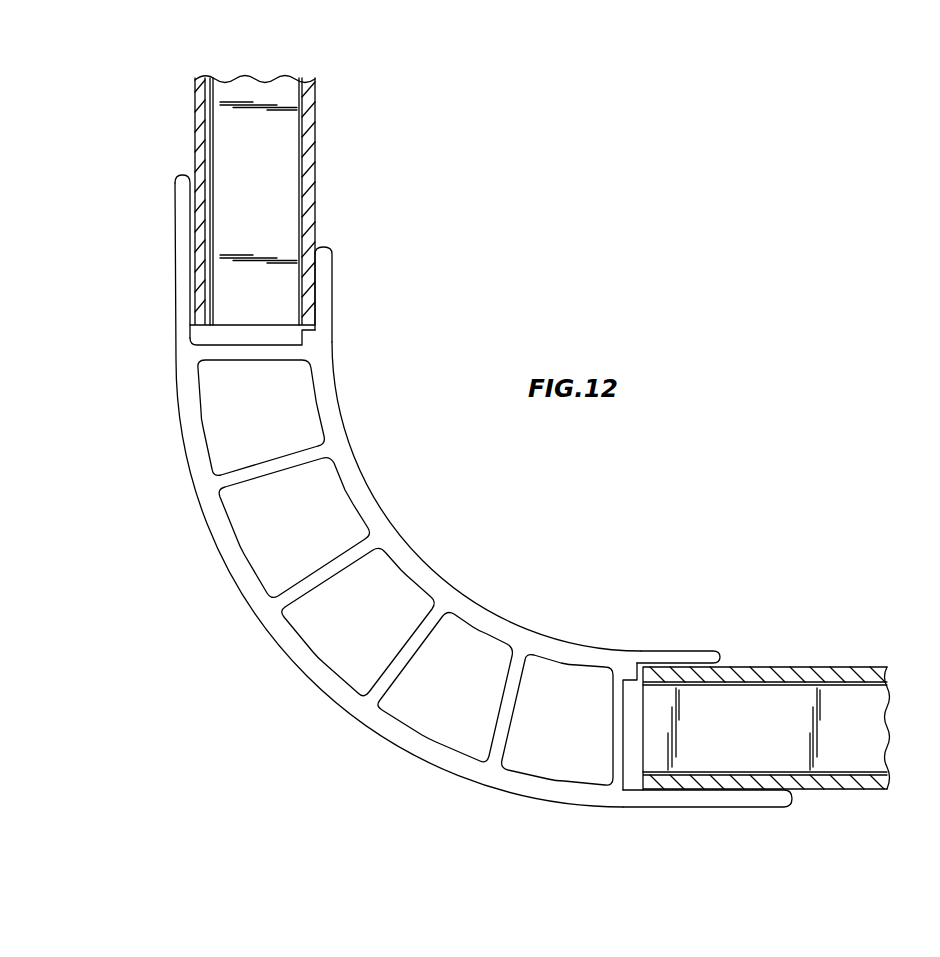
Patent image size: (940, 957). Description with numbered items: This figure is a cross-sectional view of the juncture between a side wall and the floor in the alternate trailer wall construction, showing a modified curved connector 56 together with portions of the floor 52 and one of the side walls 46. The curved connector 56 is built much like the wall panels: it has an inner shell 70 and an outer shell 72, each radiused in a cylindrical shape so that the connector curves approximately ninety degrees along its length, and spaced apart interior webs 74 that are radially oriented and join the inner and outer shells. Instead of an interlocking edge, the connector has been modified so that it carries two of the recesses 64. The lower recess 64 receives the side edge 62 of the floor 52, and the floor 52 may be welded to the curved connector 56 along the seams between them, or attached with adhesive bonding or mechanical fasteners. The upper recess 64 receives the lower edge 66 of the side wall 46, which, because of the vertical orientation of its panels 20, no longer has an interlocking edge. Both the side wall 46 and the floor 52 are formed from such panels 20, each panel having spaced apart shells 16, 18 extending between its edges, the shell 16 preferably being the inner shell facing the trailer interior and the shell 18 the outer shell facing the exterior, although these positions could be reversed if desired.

The shell 16 is at (320, 204).
The shell 18 is at (196, 125).
The panel 20 is at (192, 93).
The side wall 46 is at (340, 136).
The floor 52 is at (853, 659).
The curved connector 56 is at (463, 517).
The side edge 62 is at (647, 752).
The recess 64 is at (188, 303).
The lower edge 66 is at (272, 330).
The inner shell 70 is at (380, 516).
The outer shell 72 is at (296, 668).
The interior webs 74 is at (294, 592).